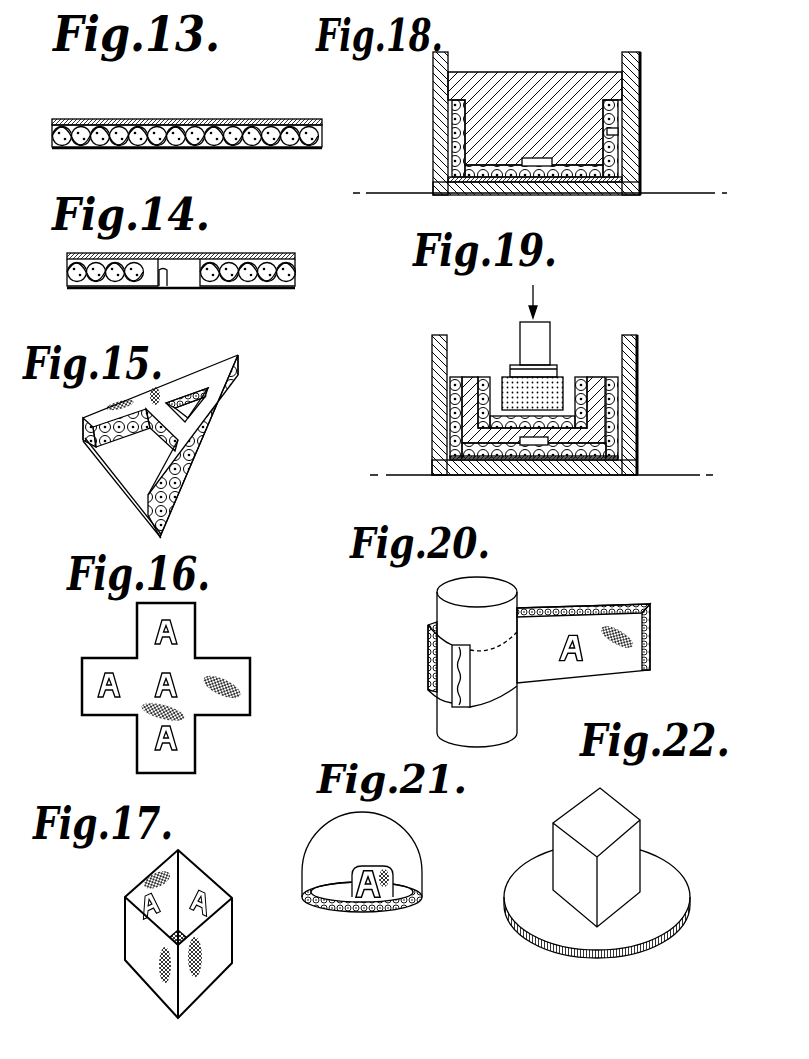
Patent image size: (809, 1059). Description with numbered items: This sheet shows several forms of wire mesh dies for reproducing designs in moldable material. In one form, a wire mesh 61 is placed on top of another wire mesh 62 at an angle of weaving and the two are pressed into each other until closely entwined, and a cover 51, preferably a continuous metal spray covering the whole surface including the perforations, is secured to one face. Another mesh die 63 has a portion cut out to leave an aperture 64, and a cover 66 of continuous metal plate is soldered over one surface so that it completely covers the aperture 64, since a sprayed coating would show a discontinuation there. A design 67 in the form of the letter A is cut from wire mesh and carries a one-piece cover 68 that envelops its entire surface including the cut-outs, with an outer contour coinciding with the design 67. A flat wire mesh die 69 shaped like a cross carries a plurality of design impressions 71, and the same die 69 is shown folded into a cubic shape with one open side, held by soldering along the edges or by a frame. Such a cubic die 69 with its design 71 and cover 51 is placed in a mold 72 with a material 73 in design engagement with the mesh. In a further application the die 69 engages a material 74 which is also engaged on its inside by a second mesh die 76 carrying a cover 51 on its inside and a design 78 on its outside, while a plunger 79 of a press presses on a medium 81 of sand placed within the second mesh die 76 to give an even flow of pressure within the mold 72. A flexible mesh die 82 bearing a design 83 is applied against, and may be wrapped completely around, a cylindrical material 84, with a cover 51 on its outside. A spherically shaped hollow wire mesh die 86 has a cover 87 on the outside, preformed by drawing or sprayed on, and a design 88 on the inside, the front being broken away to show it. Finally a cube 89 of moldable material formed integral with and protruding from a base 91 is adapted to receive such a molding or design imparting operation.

In FIG. 13, the cover 51 is at (160, 123).
In FIG. 18, the cover 51 is at (622, 174).
In FIG. 19, the cover 51 is at (625, 447).
In FIG. 20, the cover 51 is at (459, 705).
In FIG. 13, the wire mesh 61 is at (175, 148).
In FIG. 13, the wire mesh 62 is at (163, 148).
In FIG. 14, the mesh die 63 is at (101, 280).
In FIG. 14, the aperture 64 is at (166, 278).
In FIG. 14, the cover 66 is at (216, 254).
In FIG. 15, the design 67 is at (180, 443).
In FIG. 15, the cover 68 is at (128, 501).
In FIG. 16, the wire mesh die 69 is at (187, 640).
In FIG. 17, the wire mesh die 69 is at (210, 890).
In FIG. 18, the wire mesh die 69 is at (622, 103).
In FIG. 19, the wire mesh die 69 is at (618, 403).
In FIG. 16, the design impressions 71 is at (108, 675).
In FIG. 17, the design impressions 71 is at (197, 895).
In FIG. 18, the design impressions 71 is at (612, 132).
In FIG. 19, the design impressions 71 is at (540, 445).
In FIG. 18, the mold 72 is at (640, 60).
In FIG. 19, the mold 72 is at (637, 342).
In FIG. 18, the material 73 is at (568, 82).
In FIG. 19, the material 74 is at (595, 378).
In FIG. 19, the second mesh die 76 is at (490, 382).
In FIG. 19, the design 78 is at (530, 428).
In FIG. 19, the plunger 79 is at (523, 320).
In FIG. 19, the medium 81 is at (560, 377).
In FIG. 20, the flexible mesh die 82 is at (622, 623).
In FIG. 20, the design 83 is at (573, 625).
In FIG. 20, the material 84 is at (481, 592).
In FIG. 21, the hollow wire mesh die 86 is at (404, 903).
In FIG. 21, the cover 87 is at (378, 835).
In FIG. 21, the design 88 is at (368, 902).
In FIG. 22, the cube 89 is at (605, 812).
In FIG. 22, the base 91 is at (675, 867).